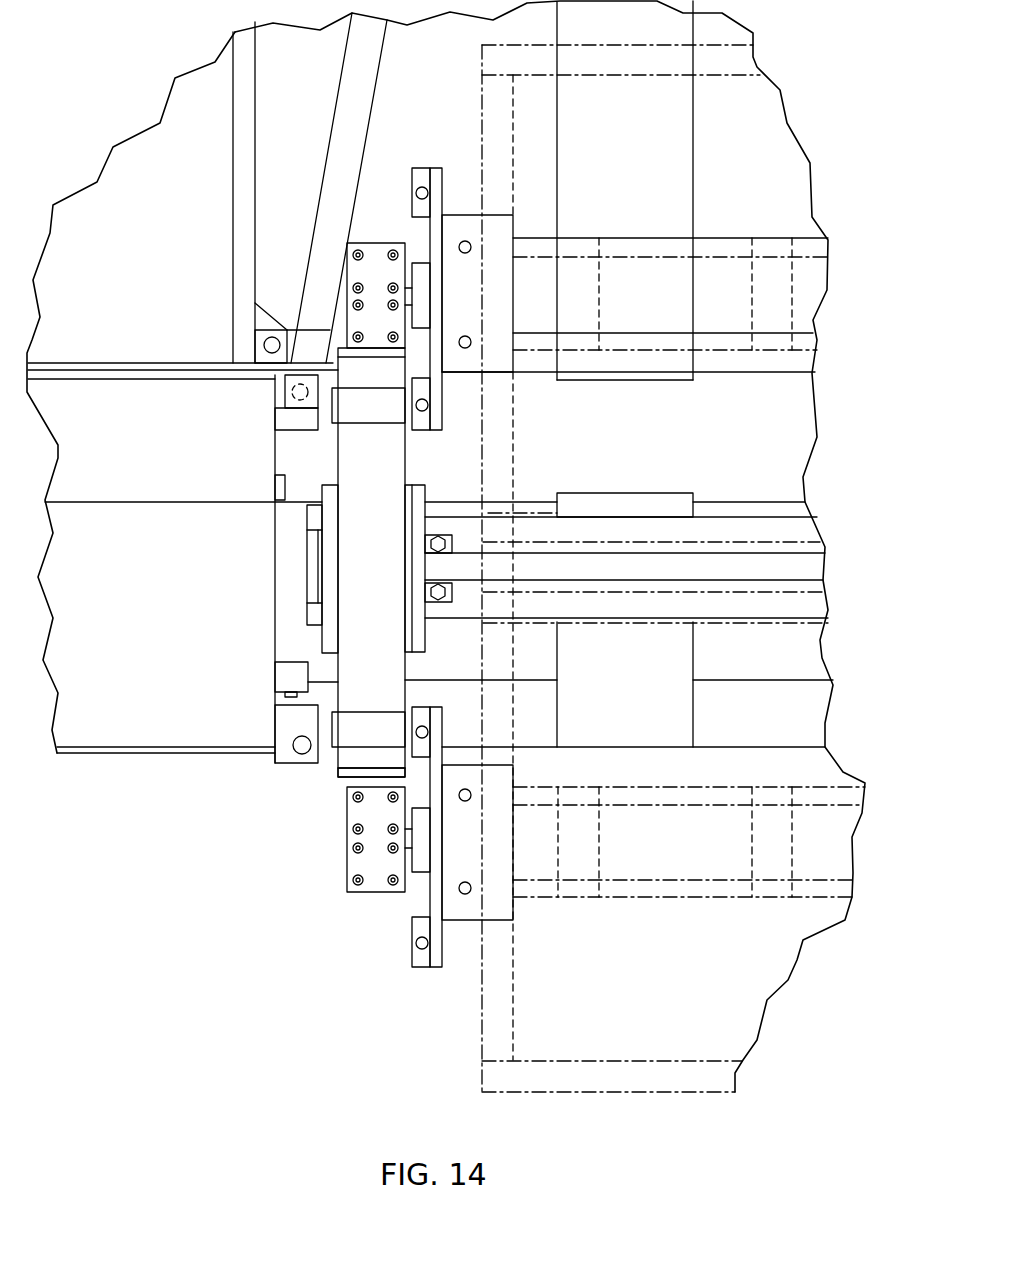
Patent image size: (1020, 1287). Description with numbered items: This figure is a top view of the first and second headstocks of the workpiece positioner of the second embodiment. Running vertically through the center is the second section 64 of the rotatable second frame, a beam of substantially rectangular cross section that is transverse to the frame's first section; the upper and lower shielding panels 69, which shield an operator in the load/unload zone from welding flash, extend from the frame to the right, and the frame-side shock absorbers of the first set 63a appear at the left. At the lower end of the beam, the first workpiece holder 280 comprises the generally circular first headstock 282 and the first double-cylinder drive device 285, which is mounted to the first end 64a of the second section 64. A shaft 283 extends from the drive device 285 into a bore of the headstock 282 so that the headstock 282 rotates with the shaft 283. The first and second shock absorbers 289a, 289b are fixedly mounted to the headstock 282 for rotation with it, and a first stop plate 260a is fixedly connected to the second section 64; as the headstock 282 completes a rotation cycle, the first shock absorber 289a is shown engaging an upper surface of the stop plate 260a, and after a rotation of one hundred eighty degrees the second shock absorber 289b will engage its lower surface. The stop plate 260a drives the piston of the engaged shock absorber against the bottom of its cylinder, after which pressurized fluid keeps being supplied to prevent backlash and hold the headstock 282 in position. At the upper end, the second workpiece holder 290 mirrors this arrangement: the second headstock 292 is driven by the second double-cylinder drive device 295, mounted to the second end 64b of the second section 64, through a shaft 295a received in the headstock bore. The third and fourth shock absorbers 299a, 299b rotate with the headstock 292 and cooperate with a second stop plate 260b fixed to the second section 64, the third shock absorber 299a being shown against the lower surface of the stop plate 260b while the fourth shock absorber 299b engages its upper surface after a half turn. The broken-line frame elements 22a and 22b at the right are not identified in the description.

The lower frame member 22a is at (605, 1085).
The upper frame member 22b is at (748, 55).
The first set of shock absorbers 63a is at (292, 745).
The second section 64 is at (355, 585).
The first end 64a is at (368, 750).
The second end 64b is at (377, 378).
The shielding panels 69 is at (815, 565).
The first stop plate 260a is at (358, 795).
The second stop plate 260b is at (437, 420).
The first workpiece holder 280 is at (437, 775).
The first headstock 282 is at (430, 965).
The shaft 283 is at (407, 848).
The first double-cylinder drive device 285 is at (357, 862).
The first shock absorber 289a is at (430, 730).
The second shock absorber 289b is at (412, 950).
The second workpiece holder 290 is at (443, 293).
The second headstock 292 is at (437, 195).
The second double-cylinder drive device 295 is at (379, 265).
The shaft 295a is at (412, 290).
The third shock absorber 299a is at (425, 405).
The fourth shock absorber 299b is at (422, 188).